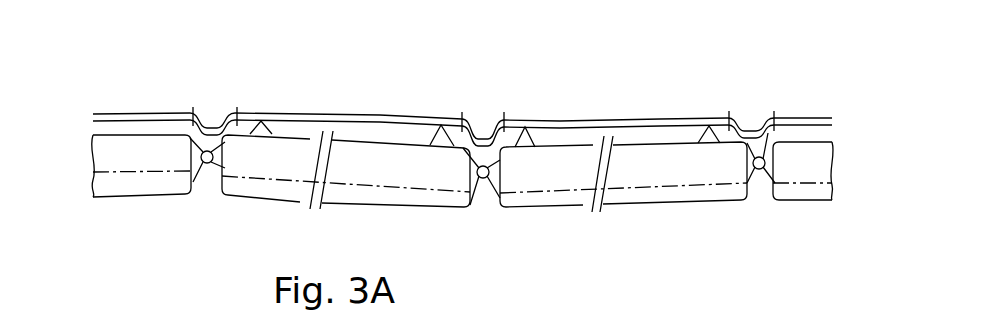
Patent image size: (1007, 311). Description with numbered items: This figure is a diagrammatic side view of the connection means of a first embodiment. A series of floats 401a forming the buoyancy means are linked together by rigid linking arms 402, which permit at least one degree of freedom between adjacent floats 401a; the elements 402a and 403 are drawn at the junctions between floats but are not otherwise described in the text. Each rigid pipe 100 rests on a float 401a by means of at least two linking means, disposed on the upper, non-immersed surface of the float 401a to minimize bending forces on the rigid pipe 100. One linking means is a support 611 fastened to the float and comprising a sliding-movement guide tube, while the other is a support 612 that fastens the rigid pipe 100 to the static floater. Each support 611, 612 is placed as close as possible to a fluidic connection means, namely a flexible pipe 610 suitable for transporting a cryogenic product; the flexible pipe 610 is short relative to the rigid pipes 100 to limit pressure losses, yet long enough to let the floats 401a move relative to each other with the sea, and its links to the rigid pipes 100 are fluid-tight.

The rigid pipe 100 is at (337, 108).
The float 401a is at (387, 143).
The rigid linking arm 402 is at (183, 148).
The link upper surface 402a is at (660, 143).
The pivot pin 403 is at (207, 142).
The flexible pipe 610 is at (483, 130).
The support with sliding-movement guide tube 611 is at (266, 108).
The support for fastening the pipe 612 is at (447, 114).